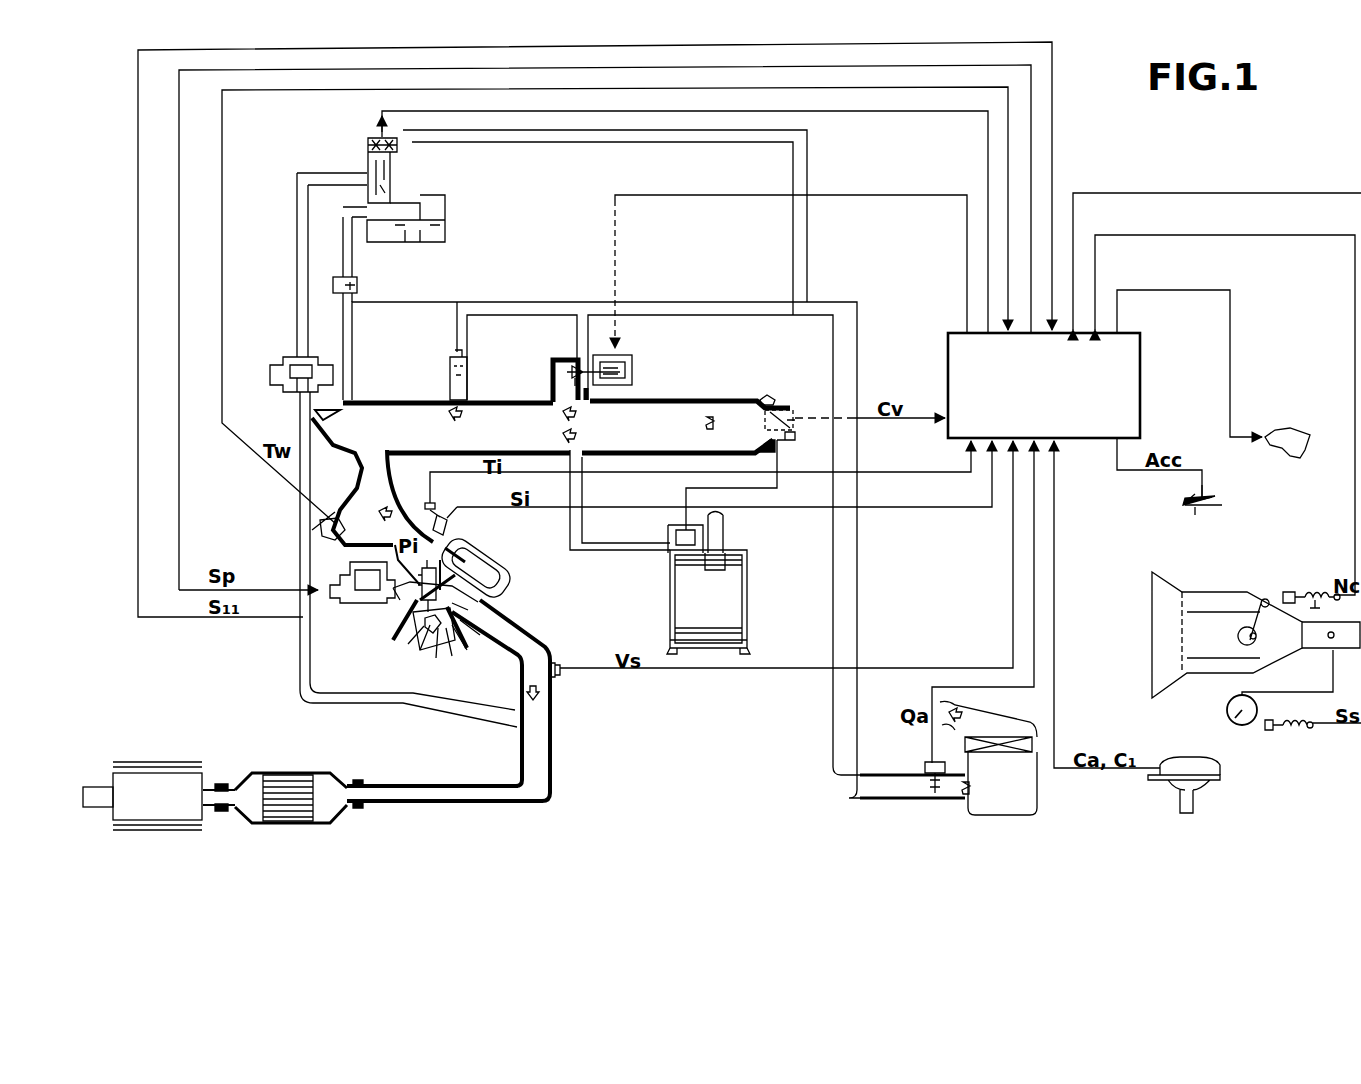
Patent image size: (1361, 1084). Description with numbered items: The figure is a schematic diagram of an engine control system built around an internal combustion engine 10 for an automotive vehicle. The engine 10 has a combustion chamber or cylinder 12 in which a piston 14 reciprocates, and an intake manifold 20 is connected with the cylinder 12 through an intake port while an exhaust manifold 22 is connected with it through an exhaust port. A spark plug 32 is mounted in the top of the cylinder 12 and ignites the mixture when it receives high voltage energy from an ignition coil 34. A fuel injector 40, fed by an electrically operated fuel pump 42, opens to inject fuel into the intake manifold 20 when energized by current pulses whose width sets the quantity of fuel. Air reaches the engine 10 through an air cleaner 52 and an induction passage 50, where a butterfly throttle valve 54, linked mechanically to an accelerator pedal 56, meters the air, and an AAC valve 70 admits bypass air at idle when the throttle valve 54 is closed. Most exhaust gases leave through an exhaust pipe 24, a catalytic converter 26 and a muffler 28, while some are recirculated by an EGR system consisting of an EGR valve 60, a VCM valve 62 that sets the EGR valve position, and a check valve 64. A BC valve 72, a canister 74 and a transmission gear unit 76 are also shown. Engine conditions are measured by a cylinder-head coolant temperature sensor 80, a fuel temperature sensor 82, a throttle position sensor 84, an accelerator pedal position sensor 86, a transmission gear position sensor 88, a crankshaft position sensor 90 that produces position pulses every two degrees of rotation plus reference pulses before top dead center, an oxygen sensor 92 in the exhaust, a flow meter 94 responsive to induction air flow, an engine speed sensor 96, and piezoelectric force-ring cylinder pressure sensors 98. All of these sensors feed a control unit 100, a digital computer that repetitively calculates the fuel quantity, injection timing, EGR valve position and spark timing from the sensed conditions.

The internal combustion engine 10 is at (423, 616).
The combustion chamber 12 is at (462, 645).
The piston 14 is at (435, 647).
The intake manifold 20 is at (375, 467).
The exhaust manifold 22 is at (522, 630).
The exhaust pipe 24 is at (552, 762).
The catalytic converter 26 is at (300, 823).
The muffler 28 is at (182, 820).
The spark plug 32 is at (423, 573).
The ignition coil 34 is at (327, 562).
The fuel injector 40 is at (447, 514).
The fuel pump 42 is at (1293, 428).
The induction passage 50 is at (513, 398).
The air cleaner 52 is at (1013, 753).
The throttle valve 54 is at (770, 420).
The accelerator pedal 56 is at (1215, 497).
The EGR valve 60 is at (293, 357).
The VCM valve 62 is at (431, 190).
The check valve 64 is at (357, 286).
The AAC valve 70 is at (638, 368).
The BC valve 72 is at (450, 360).
The canister 74 is at (750, 608).
The transmission gear unit 76 is at (1223, 600).
The cylinder-head coolant temperature sensor 80 is at (320, 527).
The fuel temperature sensor 82 is at (425, 503).
The throttle position sensor 84 is at (792, 405).
The accelerator pedal position sensor 86 is at (1197, 508).
The transmission gear position sensor 88 is at (1290, 592).
The crankshaft position sensor 90 is at (1212, 790).
The oxygen sensor 92 is at (557, 663).
The flow meter 94 is at (925, 765).
The engine speed sensor 96 is at (1270, 732).
The cylinder pressure sensor 98 is at (495, 566).
The control unit 100 is at (948, 340).